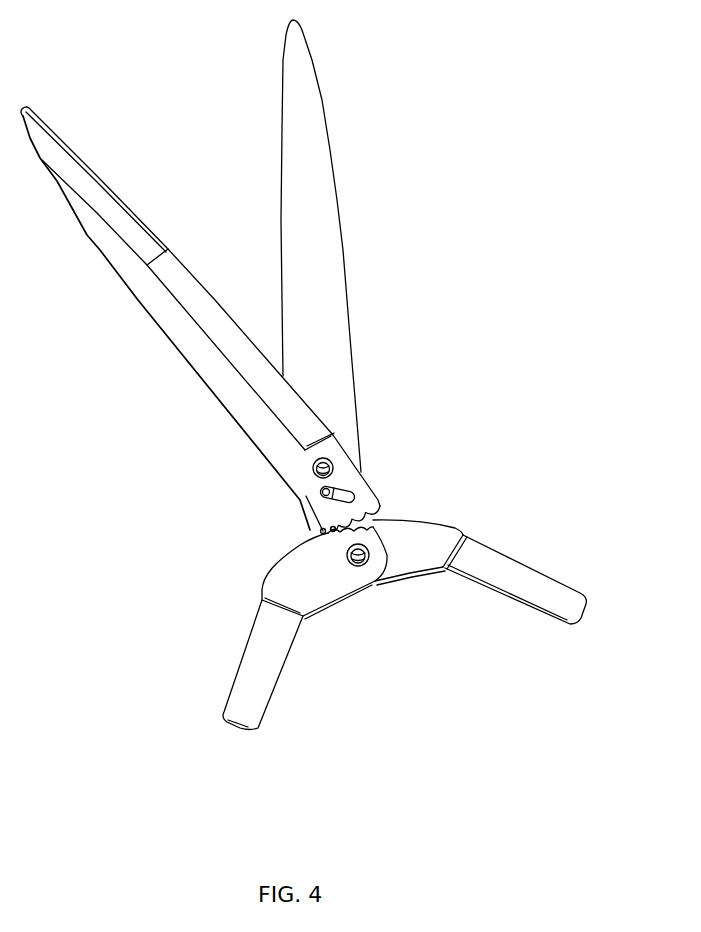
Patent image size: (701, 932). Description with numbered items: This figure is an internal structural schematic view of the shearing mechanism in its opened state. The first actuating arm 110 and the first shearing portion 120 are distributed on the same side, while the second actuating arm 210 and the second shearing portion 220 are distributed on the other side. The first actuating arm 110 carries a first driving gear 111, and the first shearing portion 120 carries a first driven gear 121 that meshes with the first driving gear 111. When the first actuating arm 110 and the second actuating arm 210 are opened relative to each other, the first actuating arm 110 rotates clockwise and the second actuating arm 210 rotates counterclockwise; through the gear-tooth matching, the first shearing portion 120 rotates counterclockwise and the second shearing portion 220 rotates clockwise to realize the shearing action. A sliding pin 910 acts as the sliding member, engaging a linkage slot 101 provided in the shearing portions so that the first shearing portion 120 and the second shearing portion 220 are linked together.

The first actuating arm 110 is at (250, 661).
The first driving gear 111 is at (371, 527).
The first shearing portion 120 is at (200, 358).
The first driven gear 121 is at (384, 502).
The linkage slot 101 is at (377, 498).
The second actuating arm 210 is at (528, 580).
The second shearing portion 220 is at (330, 253).
The sliding pin 910 is at (360, 491).